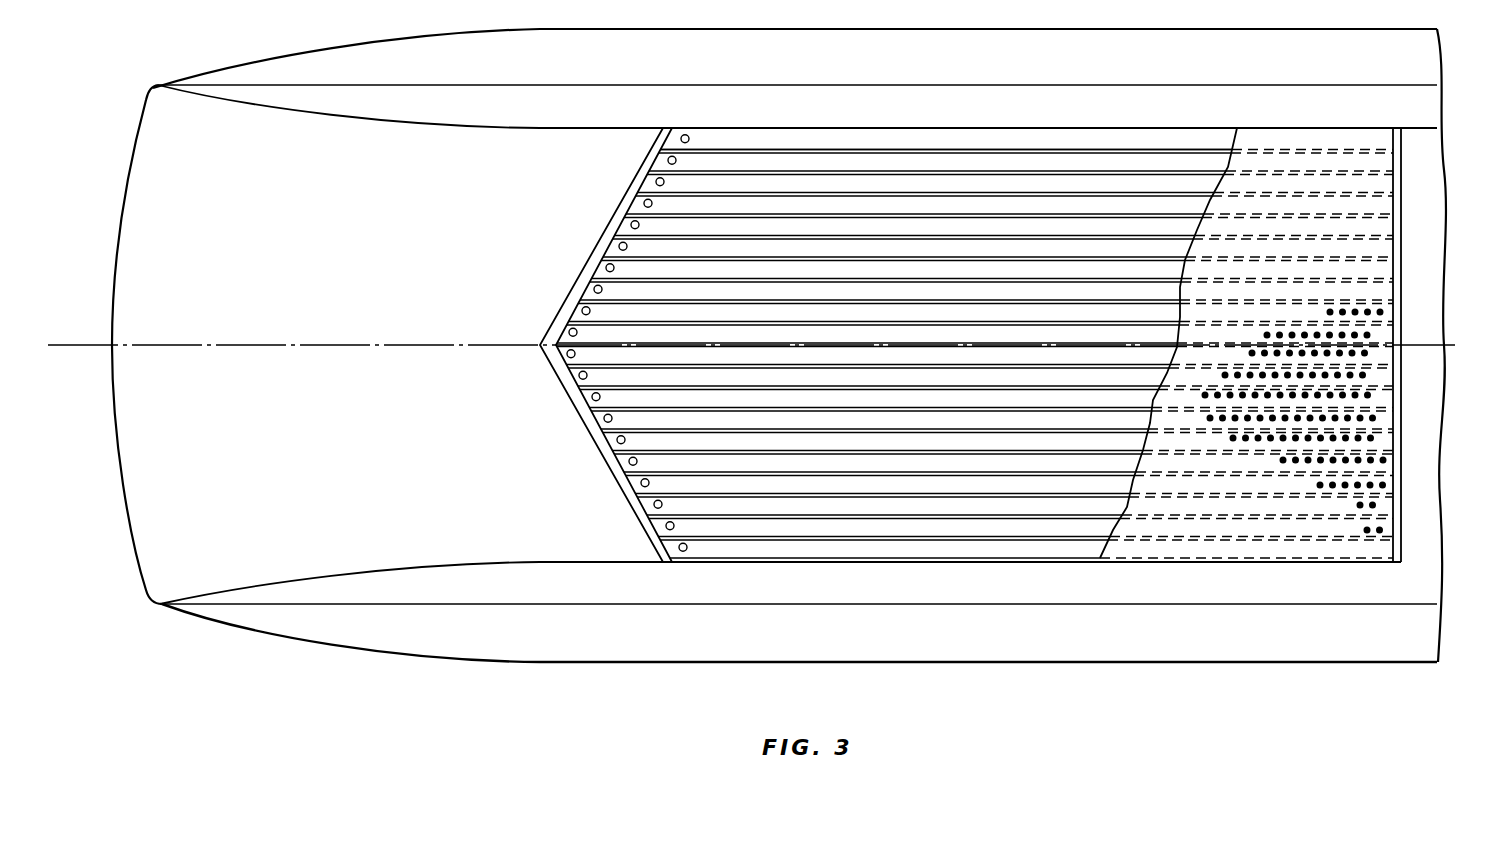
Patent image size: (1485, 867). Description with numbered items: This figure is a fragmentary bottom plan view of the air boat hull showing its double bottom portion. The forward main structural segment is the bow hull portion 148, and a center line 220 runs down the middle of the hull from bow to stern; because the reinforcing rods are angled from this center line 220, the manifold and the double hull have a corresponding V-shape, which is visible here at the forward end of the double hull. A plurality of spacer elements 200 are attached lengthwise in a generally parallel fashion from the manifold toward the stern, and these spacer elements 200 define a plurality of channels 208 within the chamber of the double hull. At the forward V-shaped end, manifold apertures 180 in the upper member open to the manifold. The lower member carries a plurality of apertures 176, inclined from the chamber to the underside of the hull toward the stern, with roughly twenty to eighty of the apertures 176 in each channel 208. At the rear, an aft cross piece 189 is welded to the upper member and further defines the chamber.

The bow hull portion 148 is at (330, 420).
The center line 220 is at (303, 340).
The spacer elements 200 is at (985, 185).
The channels 208 is at (820, 508).
The manifold apertures 180 is at (604, 262).
The apertures 176 is at (1366, 396).
The aft cross piece 189 is at (1401, 527).